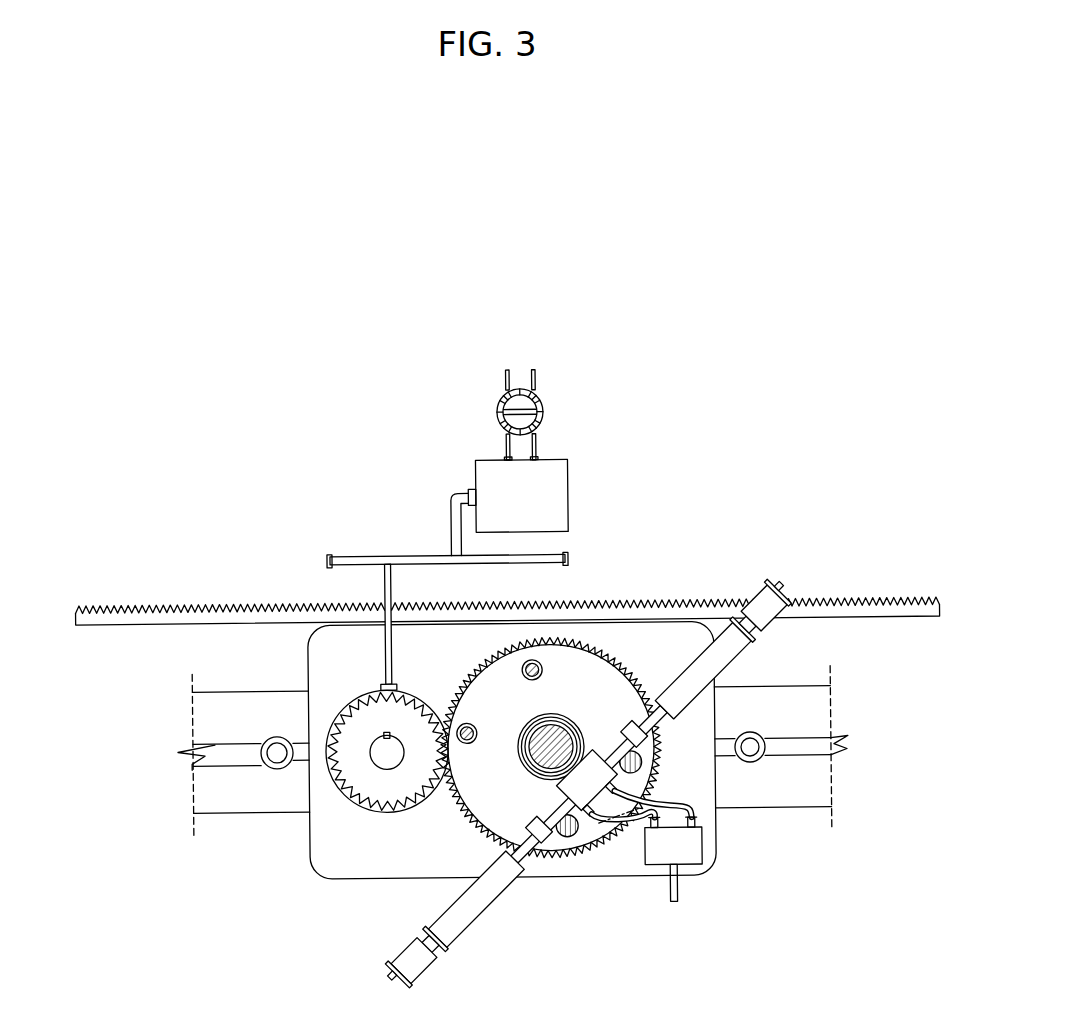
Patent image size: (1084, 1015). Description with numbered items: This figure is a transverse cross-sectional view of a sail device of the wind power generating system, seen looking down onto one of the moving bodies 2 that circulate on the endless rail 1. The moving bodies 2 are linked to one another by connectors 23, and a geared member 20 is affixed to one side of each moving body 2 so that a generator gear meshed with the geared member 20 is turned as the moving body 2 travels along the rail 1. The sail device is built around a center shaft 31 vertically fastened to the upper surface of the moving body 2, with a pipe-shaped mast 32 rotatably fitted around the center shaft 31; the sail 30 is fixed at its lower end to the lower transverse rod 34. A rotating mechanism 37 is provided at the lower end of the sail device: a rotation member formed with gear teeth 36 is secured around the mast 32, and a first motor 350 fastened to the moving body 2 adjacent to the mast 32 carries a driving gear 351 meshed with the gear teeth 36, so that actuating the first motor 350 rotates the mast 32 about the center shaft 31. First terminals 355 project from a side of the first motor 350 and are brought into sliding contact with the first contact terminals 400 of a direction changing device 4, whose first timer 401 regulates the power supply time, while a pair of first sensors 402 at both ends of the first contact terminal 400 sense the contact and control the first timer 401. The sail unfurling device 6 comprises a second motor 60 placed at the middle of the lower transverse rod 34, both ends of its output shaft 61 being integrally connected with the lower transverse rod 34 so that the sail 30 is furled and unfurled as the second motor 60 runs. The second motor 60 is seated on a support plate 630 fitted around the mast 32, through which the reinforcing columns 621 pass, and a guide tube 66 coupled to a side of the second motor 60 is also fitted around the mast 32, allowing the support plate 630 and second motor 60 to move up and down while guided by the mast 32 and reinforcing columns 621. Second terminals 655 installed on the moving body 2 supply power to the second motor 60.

The rail 1 is at (513, 754).
The moving body 2 is at (700, 873).
The direction changing device 4 is at (445, 477).
The sail unfurling device 6 is at (564, 769).
The geared member 20 is at (881, 600).
The connector 23 is at (243, 757).
The sail 30 is at (589, 784).
The center shaft 31 is at (532, 731).
The mast 32 is at (554, 723).
The lower transverse rod 34 is at (584, 727).
The gear teeth 36 is at (557, 741).
The rotating mechanism 37 is at (437, 828).
The second motor 60 is at (591, 784).
The output shaft 61 is at (589, 784).
The guide tube 66 is at (518, 731).
The first motor 350 is at (387, 762).
The driving gear 351 is at (373, 810).
The first terminal 355 is at (394, 586).
The first contact terminal 400 is at (445, 537).
The first timer 401 is at (500, 421).
The first sensor 402 is at (330, 564).
The reinforcing column 621 is at (470, 743).
The support plate 630 is at (620, 658).
The second terminal 655 is at (678, 902).